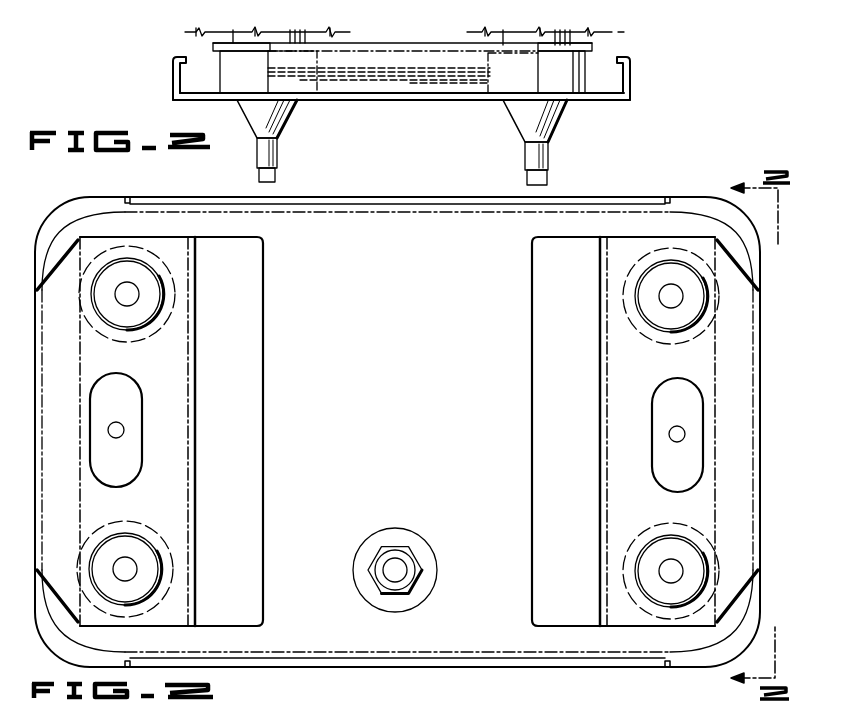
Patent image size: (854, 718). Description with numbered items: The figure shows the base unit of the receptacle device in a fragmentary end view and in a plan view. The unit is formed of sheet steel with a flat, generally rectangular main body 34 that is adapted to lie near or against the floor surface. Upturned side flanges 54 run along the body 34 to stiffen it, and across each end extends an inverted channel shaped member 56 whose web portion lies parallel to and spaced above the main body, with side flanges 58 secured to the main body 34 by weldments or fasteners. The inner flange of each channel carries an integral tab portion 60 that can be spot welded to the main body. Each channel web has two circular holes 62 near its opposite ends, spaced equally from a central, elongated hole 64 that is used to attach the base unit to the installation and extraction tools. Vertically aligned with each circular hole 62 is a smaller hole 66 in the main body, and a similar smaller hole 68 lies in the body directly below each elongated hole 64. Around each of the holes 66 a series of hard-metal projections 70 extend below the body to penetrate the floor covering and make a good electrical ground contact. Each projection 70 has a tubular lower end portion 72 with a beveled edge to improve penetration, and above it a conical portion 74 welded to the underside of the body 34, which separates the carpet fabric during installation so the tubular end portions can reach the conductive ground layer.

In FIG. 2, the main body 34 is at (331, 95).
In FIG. 3, the main body 34 is at (416, 411).
In FIG. 2, the upturned side flanges 54 is at (173, 67).
In FIG. 3, the upturned side flanges 54 is at (481, 204).
In FIG. 2, the inverted channel shaped member 56 is at (378, 43).
In FIG. 3, the inverted channel shaped member 56 is at (182, 406).
In FIG. 2, the side flanges 58 is at (416, 84).
In FIG. 3, the side flanges 58 is at (601, 399).
In FIG. 3, the integral tab portion 60 is at (253, 397).
In FIG. 3, the circular holes 62 is at (145, 324).
In FIG. 3, the elongated hole 64 is at (141, 464).
In FIG. 3, the smaller hole 66 is at (134, 290).
In FIG. 3, the smaller hole 68 is at (122, 431).
In FIG. 2, the projections 70 is at (431, 142).
In FIG. 2, the tubular lower end portion 72 is at (549, 158).
In FIG. 2, the conical portion 74 is at (520, 115).